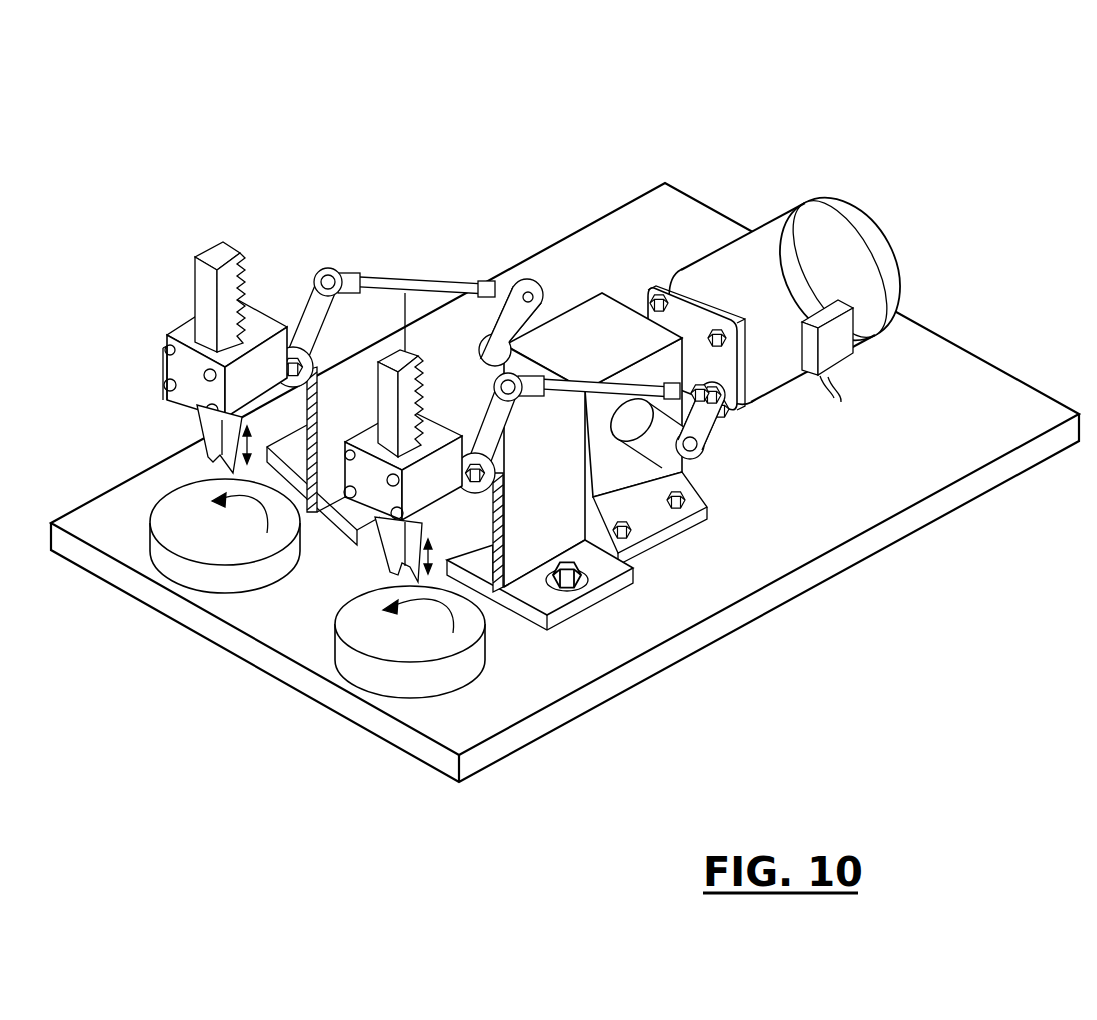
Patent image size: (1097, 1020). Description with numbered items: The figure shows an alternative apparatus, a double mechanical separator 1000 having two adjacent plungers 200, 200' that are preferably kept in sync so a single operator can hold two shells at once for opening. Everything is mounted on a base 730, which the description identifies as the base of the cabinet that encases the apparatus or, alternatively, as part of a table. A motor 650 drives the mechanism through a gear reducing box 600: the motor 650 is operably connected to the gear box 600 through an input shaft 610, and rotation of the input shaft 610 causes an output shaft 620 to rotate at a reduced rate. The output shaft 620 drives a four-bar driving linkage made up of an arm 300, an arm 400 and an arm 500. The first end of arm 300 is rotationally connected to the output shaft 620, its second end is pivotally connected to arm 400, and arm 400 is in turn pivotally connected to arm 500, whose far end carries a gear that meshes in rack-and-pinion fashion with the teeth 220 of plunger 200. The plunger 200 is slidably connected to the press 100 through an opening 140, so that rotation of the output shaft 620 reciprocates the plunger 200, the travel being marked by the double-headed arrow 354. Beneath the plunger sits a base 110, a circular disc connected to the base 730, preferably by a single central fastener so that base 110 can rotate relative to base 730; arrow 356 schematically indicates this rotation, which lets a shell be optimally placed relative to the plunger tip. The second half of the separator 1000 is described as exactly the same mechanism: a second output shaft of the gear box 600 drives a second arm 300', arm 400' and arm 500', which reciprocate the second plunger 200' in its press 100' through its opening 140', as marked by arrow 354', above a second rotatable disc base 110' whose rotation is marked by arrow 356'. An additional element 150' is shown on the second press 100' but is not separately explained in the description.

The double mechanical separator 1000 is at (508, 70).
The press 100 is at (577, 487).
The second support stand 100' is at (336, 419).
The base 110 is at (410, 642).
The second rotating workpiece 110' is at (225, 536).
The opening 140 is at (414, 423).
The second tool holder 140' is at (198, 337).
The lever 150' is at (126, 373).
The plunger 200 is at (366, 553).
The second plunger 200' is at (162, 439).
The teeth 220 is at (243, 267).
The arm 300 is at (734, 423).
The second crank arm 300' is at (519, 281).
The reciprocating motion 354 is at (454, 546).
The second reciprocating motion 354' is at (275, 441).
The arrow 356 is at (443, 664).
The second rotation direction 356' is at (180, 512).
The second arm 400 is at (613, 371).
The second connecting rod 400' is at (416, 261).
The third arm 500 is at (513, 433).
The second rocker arm 500' is at (321, 301).
The gear reducing box 600 is at (588, 305).
The input shaft 610 is at (757, 287).
The output shaft 620 is at (648, 440).
The motor 650 is at (853, 263).
The base 730 is at (902, 466).